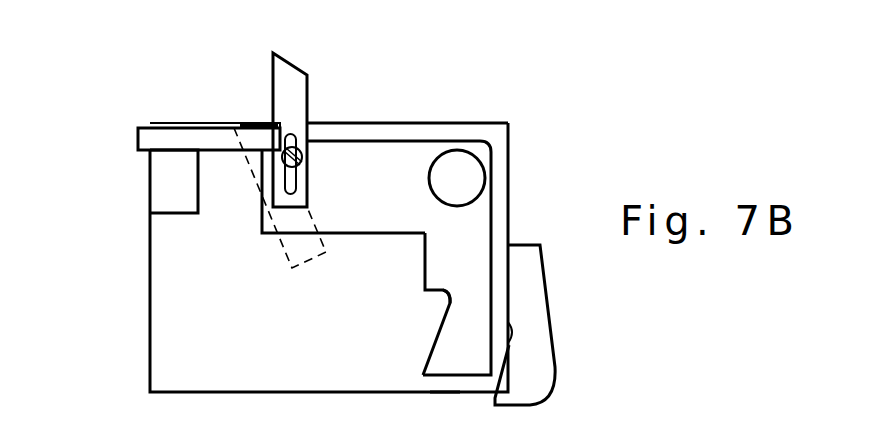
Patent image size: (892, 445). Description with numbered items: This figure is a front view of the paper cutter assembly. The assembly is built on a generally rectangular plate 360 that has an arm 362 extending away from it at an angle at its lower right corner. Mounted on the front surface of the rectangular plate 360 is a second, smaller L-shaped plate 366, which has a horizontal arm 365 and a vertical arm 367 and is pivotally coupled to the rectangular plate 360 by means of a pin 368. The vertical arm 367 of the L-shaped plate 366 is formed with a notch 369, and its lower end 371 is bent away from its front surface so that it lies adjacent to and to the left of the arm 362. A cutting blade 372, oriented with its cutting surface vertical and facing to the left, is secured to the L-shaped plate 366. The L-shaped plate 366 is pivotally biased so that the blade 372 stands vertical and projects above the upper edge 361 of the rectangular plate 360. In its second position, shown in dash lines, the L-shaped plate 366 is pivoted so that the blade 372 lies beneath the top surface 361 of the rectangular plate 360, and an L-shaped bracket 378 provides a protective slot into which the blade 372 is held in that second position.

The rectangular plate 360 is at (238, 317).
The upper edge 361 is at (378, 123).
The arm 362 is at (556, 370).
The horizontal arm 365 is at (323, 203).
The L-shaped plate 366 is at (425, 141).
The vertical arm 367 is at (450, 275).
The pin 368 is at (465, 177).
The notch 369 is at (445, 298).
The lower end 371 is at (445, 392).
The cutting blade 372 is at (304, 86).
The L-shaped bracket 378 is at (162, 177).